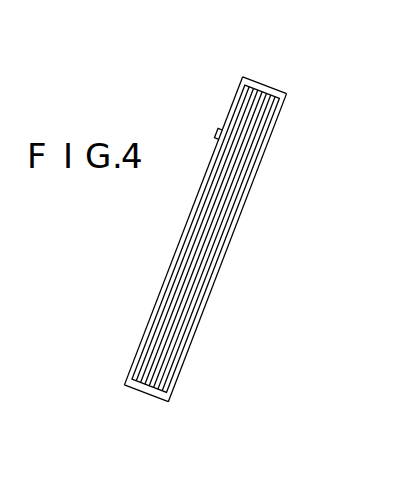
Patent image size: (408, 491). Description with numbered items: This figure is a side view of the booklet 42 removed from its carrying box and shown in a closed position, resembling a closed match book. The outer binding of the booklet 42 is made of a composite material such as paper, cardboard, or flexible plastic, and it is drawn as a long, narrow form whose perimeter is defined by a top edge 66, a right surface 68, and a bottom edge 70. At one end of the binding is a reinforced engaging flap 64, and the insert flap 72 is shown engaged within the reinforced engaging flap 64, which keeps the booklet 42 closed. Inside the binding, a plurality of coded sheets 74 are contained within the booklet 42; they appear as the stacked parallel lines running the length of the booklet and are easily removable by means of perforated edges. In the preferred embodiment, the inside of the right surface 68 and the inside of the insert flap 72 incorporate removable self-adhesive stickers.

The booklet 42 is at (266, 331).
The reinforced engaging flap 64 is at (232, 133).
The top edge 66 is at (267, 86).
The right surface 68 is at (240, 222).
The bottom edge 70 is at (142, 394).
The insert flap 72 is at (173, 267).
The coded sheets 74 is at (242, 170).